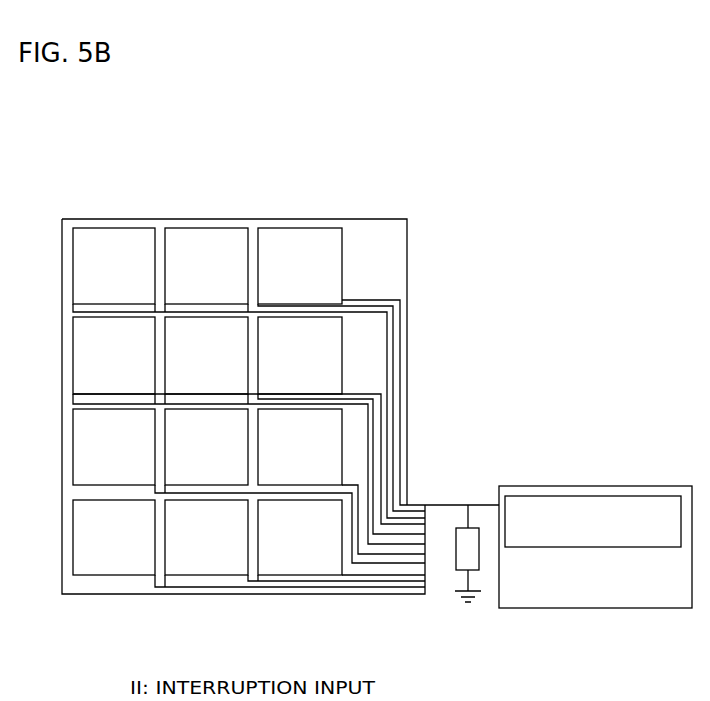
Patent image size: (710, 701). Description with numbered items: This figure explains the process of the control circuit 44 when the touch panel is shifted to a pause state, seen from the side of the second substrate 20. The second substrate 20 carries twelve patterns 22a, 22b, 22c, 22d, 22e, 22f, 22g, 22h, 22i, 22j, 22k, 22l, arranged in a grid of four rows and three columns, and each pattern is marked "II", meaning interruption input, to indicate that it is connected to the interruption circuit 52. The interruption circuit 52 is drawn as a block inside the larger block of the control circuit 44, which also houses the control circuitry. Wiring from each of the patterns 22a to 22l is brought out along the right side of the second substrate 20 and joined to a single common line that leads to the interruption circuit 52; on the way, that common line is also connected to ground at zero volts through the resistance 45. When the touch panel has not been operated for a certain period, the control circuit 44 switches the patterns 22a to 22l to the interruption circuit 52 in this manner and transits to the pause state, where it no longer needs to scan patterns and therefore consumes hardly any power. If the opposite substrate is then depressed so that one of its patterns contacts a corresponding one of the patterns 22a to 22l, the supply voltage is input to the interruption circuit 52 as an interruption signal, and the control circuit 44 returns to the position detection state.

The second substrate 20 is at (360, 219).
The pattern 22a is at (285, 240).
The pattern 22b is at (192, 238).
The pattern 22c is at (100, 238).
The pattern 22d is at (332, 335).
The pattern 22e is at (176, 326).
The pattern 22f is at (84, 358).
The pattern 22g is at (330, 444).
The pattern 22h is at (172, 418).
The pattern 22i is at (84, 451).
The pattern 22j is at (301, 565).
The pattern 22k is at (203, 565).
The pattern 22l is at (100, 565).
The control circuit 44 is at (555, 486).
The resistance 45 is at (467, 537).
The interruption circuit 52 is at (618, 496).